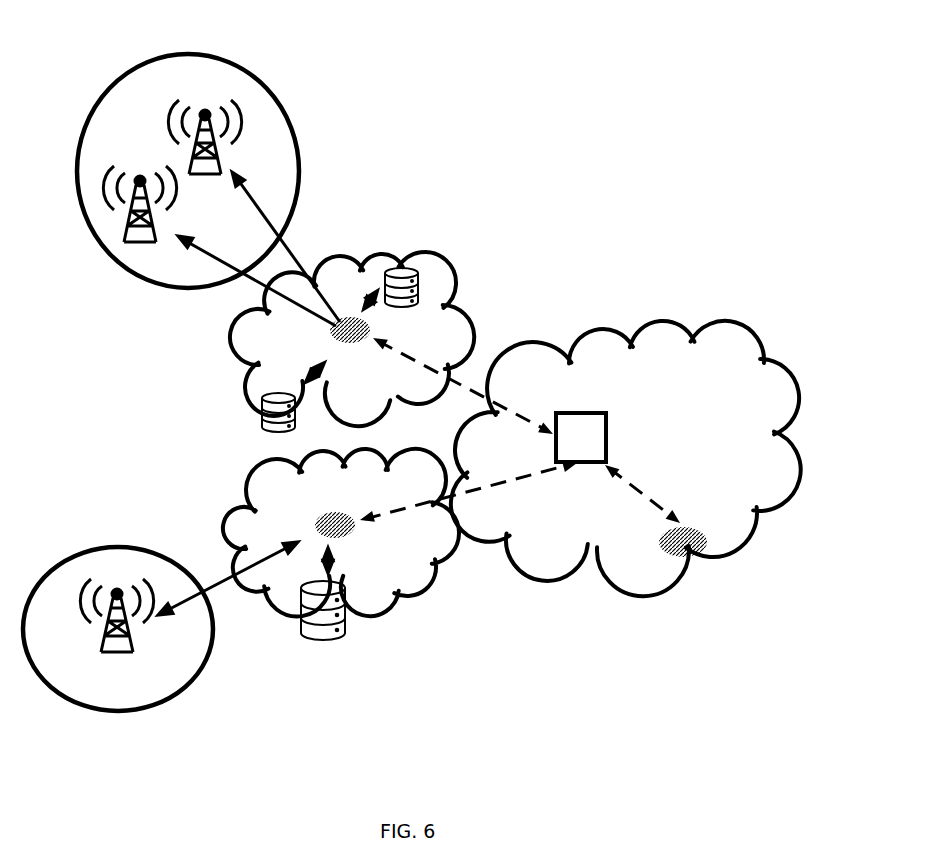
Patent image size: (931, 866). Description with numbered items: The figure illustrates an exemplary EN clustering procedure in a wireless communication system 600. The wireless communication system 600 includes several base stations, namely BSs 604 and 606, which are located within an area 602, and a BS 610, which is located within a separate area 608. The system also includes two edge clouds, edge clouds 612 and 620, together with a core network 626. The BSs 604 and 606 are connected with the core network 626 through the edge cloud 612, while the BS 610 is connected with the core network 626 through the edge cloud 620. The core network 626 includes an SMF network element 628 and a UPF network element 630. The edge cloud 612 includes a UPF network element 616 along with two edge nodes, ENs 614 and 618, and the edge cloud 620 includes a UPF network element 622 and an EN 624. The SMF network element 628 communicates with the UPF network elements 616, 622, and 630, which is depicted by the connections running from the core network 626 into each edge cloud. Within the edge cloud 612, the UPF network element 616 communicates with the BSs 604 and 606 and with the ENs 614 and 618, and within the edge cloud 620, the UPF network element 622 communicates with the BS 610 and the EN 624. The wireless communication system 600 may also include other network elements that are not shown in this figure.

The wireless communication system 600 is at (705, 123).
The area 602 is at (200, 53).
The BS 604 is at (204, 109).
The BS 606 is at (140, 176).
The area 608 is at (102, 547).
The BS 610 is at (136, 641).
The edge cloud 612 is at (356, 262).
The EN 614 is at (428, 290).
The UPF network element 616 is at (372, 330).
The EN 618 is at (298, 396).
The edge cloud 620 is at (388, 448).
The UPF network element 622 is at (350, 512).
The EN 624 is at (335, 580).
The core network 626 is at (728, 325).
The SMF network element 628 is at (590, 411).
The UPF network element 630 is at (686, 526).